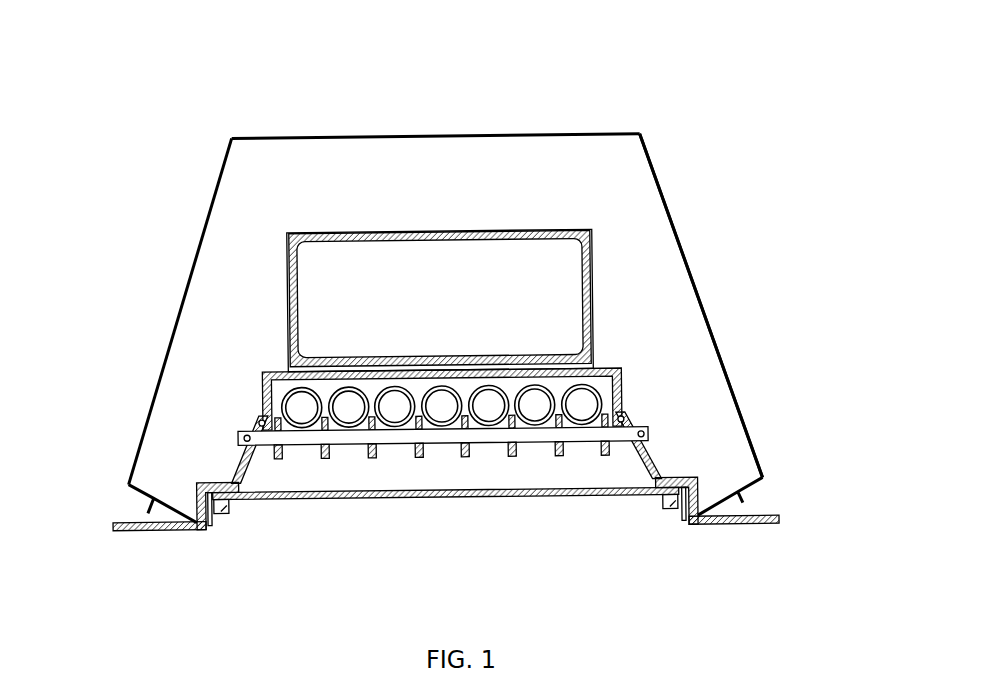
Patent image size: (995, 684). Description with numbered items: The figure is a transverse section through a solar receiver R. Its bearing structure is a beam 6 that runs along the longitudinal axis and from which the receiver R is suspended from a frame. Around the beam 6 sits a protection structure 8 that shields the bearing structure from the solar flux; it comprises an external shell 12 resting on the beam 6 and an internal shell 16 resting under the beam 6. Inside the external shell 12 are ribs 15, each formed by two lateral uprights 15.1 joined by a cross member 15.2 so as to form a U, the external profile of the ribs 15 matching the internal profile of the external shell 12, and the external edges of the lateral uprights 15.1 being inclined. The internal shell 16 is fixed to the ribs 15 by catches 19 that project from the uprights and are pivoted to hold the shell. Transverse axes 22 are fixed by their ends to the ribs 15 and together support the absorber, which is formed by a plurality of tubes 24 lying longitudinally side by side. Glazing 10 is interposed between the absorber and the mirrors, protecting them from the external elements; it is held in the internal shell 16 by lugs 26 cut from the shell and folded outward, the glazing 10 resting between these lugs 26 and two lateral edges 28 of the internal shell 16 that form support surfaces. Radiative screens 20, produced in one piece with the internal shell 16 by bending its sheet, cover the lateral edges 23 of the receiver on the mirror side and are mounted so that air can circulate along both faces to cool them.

The solar receiver R is at (374, 103).
The beam 6 is at (398, 228).
The protection structure 8 is at (662, 138).
The glazing 10 is at (430, 498).
The external shell 12 is at (685, 247).
The ribs 15 is at (690, 340).
The lateral uprights 15.1 is at (238, 207).
The cross member 15.2 is at (453, 150).
The internal shell 16 is at (653, 449).
The catches 19 is at (210, 523).
The radiative screens 20 is at (160, 532).
The transverse axes 22 is at (440, 443).
The lateral edges 23 is at (153, 493).
The tubes 24 is at (263, 390).
The lugs 26 is at (227, 507).
The lateral edges 28 is at (217, 486).